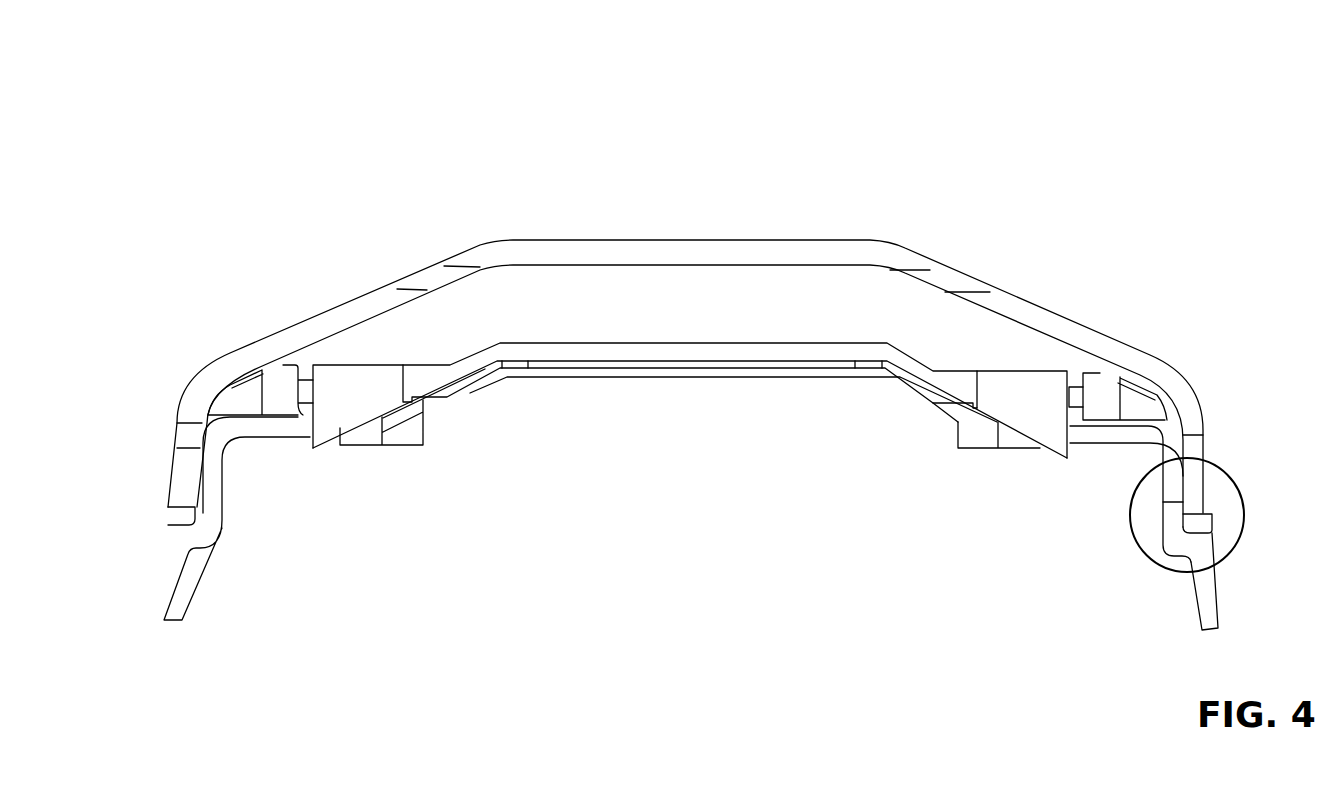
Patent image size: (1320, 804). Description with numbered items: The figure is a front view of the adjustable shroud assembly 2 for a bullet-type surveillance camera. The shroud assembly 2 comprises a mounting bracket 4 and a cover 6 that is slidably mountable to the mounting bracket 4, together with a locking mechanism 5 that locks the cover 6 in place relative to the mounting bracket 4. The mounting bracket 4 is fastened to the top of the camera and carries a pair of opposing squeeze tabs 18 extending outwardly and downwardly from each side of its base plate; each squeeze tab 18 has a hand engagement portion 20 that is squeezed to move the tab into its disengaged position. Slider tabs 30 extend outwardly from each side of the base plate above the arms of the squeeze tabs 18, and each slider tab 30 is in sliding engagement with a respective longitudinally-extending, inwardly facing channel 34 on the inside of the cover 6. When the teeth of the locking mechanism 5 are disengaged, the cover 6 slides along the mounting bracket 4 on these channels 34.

The adjustable shroud assembly 2 is at (690, 320).
The mounting bracket 4 is at (870, 400).
The locking mechanism 5 is at (1226, 477).
The cover 6 is at (1017, 300).
The squeeze tab 18 is at (1120, 540).
The hand engagement portion 20 is at (1218, 582).
The slider tab 30 is at (1080, 393).
The channel 34 is at (1027, 420).